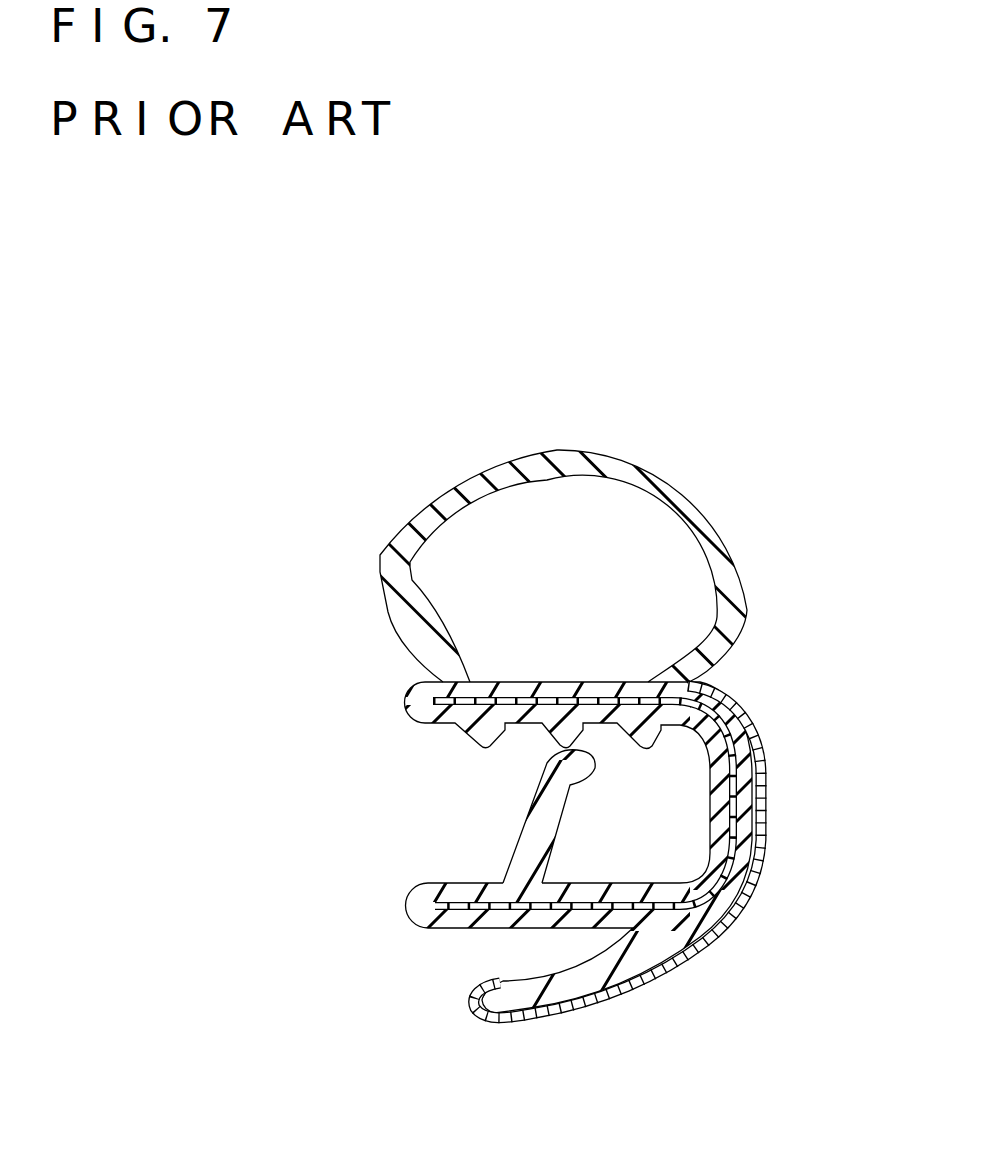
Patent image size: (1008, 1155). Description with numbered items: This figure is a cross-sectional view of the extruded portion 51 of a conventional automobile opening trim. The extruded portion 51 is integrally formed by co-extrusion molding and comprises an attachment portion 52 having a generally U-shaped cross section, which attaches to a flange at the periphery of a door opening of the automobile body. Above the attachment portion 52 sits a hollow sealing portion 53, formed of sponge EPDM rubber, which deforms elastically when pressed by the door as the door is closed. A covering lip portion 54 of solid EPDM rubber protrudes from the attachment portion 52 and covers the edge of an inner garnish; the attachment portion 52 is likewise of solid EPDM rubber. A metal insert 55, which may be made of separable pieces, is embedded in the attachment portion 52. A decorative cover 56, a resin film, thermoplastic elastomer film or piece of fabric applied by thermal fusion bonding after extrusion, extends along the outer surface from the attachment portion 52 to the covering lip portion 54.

The extruded portion 51 is at (423, 482).
The attachment portion 52 is at (748, 805).
The hollow sealing portion 53 is at (547, 468).
The covering lip portion 54 is at (573, 993).
The metal insert 55 is at (453, 900).
The decorative cover 56 is at (762, 880).